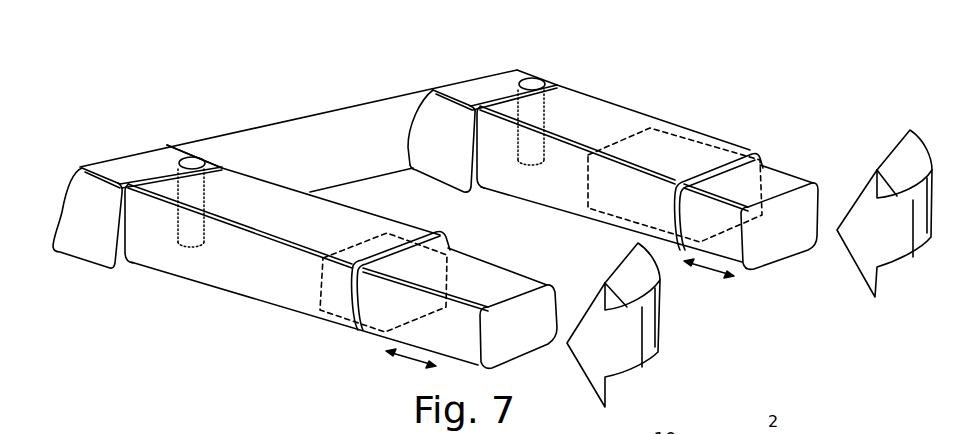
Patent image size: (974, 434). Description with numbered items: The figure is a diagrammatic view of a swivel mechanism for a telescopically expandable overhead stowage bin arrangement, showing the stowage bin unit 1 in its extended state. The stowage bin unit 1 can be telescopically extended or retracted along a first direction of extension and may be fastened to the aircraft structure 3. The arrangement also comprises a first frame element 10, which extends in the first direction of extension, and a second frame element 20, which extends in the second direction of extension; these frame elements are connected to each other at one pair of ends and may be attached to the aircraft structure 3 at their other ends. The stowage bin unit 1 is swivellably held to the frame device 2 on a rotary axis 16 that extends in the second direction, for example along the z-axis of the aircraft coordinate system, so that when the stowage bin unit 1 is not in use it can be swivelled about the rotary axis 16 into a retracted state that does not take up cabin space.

The stowage bin unit 1 is at (228, 262).
The frame device 2 is at (122, 168).
The aircraft structure 3 is at (317, 128).
The first frame element 10 is at (273, 308).
The rotary axis 16 is at (192, 157).
The second frame element 20 is at (350, 307).